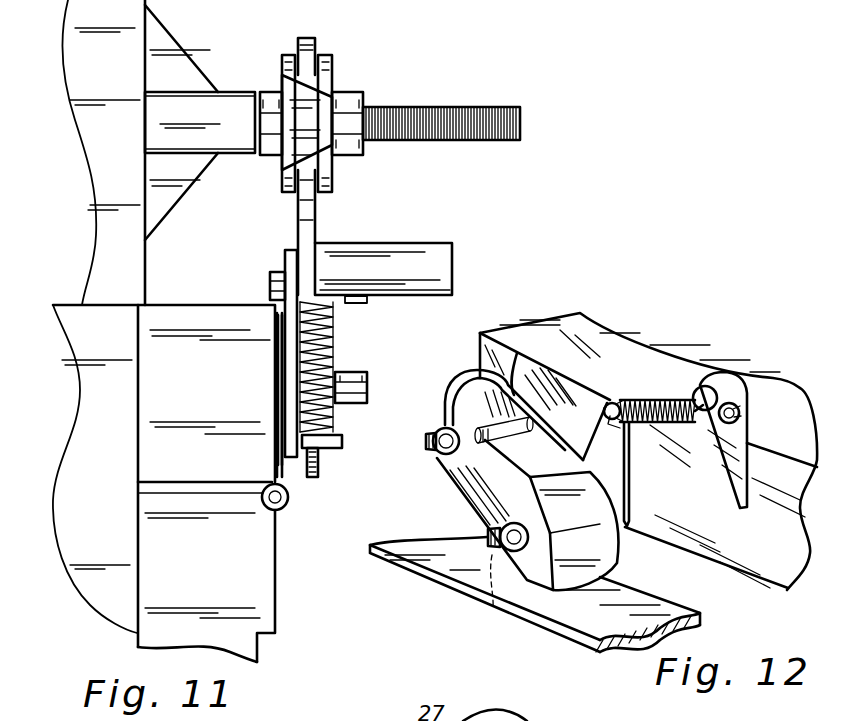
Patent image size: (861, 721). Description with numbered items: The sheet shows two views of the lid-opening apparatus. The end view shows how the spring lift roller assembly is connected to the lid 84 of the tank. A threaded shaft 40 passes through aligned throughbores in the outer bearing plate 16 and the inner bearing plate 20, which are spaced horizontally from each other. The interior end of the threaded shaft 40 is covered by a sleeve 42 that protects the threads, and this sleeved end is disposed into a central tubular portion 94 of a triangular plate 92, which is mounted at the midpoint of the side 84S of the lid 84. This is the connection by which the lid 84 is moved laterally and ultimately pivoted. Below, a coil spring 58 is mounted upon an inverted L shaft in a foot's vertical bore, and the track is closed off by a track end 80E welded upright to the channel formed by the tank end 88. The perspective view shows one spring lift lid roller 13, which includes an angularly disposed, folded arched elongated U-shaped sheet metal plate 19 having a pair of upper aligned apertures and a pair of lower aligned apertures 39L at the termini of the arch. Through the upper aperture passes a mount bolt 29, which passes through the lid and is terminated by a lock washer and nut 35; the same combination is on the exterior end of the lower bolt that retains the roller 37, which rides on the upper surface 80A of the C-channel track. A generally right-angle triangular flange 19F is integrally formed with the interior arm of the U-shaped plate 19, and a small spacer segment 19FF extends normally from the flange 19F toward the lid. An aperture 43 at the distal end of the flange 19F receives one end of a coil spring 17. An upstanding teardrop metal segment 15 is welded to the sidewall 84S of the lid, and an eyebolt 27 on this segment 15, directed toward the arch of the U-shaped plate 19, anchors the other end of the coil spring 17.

In FIG. 11, the lid 84 is at (100, 152).
In FIG. 12, the lid 84 is at (667, 358).
In FIG. 11, the triangular plate 92 is at (190, 58).
In FIG. 11, the central tubular portion 94 is at (240, 157).
In FIG. 11, the inner bearing plate 20 is at (282, 188).
In FIG. 11, the outer bearing plate 16 is at (340, 67).
In FIG. 11, the sleeve 42 is at (348, 155).
In FIG. 11, the threaded shaft 40 is at (475, 107).
In FIG. 11, the coil spring 58 is at (337, 348).
In FIG. 11, the track end 80E is at (167, 476).
In FIG. 11, the end 88 is at (206, 586).
In FIG. 12, the side of the lid 84S is at (750, 567).
In FIG. 12, the lower aligned apertures 39L is at (515, 363).
In FIG. 12, the mount bolt 29 is at (450, 412).
In FIG. 12, the nut 35 is at (426, 447).
In FIG. 12, the U-shaped sheet metal plate 19 is at (478, 505).
In FIG. 12, the spring lift lid roller 13 is at (405, 490).
In FIG. 12, the roller 37 is at (553, 539).
In FIG. 12, the upper surface 80A is at (412, 563).
In FIG. 12, the triangular flange 19F is at (633, 448).
In FIG. 12, the coil spring 17 is at (655, 402).
In FIG. 12, the spacer segment 19FF is at (600, 402).
In FIG. 12, the aperture 43 is at (614, 417).
In FIG. 12, the eyebolt 27 is at (712, 385).
In FIG. 12, the teardrop metal segment 15 is at (750, 430).